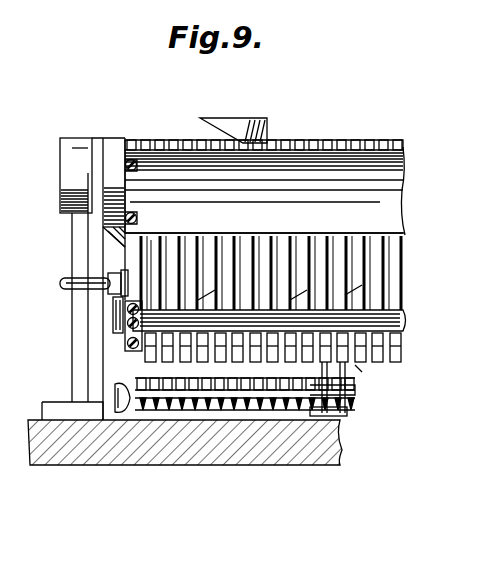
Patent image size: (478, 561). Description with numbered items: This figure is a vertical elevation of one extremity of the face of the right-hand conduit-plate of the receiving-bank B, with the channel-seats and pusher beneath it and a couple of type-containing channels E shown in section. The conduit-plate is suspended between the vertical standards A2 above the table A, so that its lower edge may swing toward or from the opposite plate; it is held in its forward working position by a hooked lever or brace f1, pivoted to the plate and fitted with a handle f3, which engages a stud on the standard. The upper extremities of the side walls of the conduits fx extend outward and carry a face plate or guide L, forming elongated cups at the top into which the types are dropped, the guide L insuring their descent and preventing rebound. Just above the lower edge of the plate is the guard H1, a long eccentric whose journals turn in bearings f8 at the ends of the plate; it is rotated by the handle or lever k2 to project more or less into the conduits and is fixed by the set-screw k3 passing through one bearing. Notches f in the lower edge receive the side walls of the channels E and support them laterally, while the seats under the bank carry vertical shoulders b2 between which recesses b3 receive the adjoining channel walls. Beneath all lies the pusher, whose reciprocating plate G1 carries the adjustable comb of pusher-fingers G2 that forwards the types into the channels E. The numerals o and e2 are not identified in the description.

The hopper o is at (233, 119).
The receiving-bank B is at (264, 124).
The face plate or guide L is at (265, 191).
The bearings f8 is at (151, 275).
The conduits fx is at (281, 287).
The guard H1 is at (269, 313).
The handle f3 is at (60, 283).
The hooked lever or brace f1 is at (112, 273).
The handle or lever k2 is at (112, 305).
The set-screw k3 is at (112, 330).
The vertical standards A2 is at (85, 350).
The table A is at (185, 433).
The reciprocating plate G1 is at (96, 396).
The chain links e2 is at (245, 377).
The vertical shoulders or projections b2 is at (245, 398).
The recesses b3 is at (240, 412).
The combs of pusher-fingers G2 is at (360, 398).
The type-containing channels E is at (347, 398).
The notches f is at (362, 385).